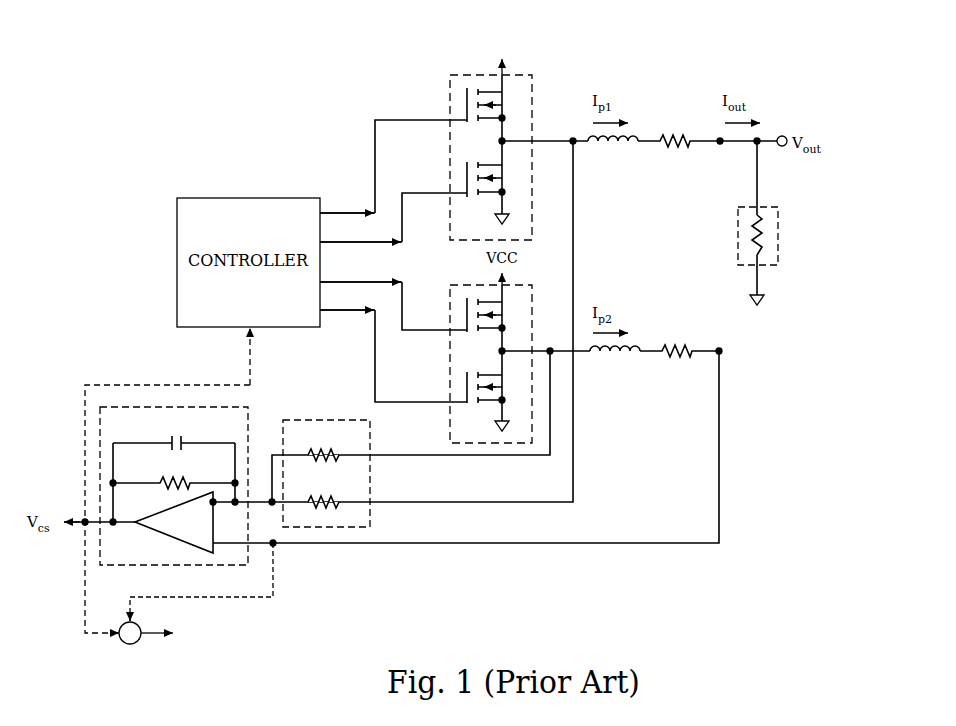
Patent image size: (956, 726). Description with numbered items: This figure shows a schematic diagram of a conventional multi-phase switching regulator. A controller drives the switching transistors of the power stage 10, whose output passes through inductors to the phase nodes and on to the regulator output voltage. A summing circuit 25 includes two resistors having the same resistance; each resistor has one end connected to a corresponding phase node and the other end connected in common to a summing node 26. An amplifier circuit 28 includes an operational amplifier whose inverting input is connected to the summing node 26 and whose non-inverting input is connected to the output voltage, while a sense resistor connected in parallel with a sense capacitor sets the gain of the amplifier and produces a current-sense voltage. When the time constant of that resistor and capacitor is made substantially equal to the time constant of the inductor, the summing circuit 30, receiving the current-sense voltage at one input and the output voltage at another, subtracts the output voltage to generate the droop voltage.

The power stage (switching transistor pair) 10 is at (450, 95).
The summing circuit 25 is at (335, 420).
The summing node 26 is at (270, 500).
The current sense amplifier block 28 is at (170, 565).
The summing circuit 30 is at (136, 643).